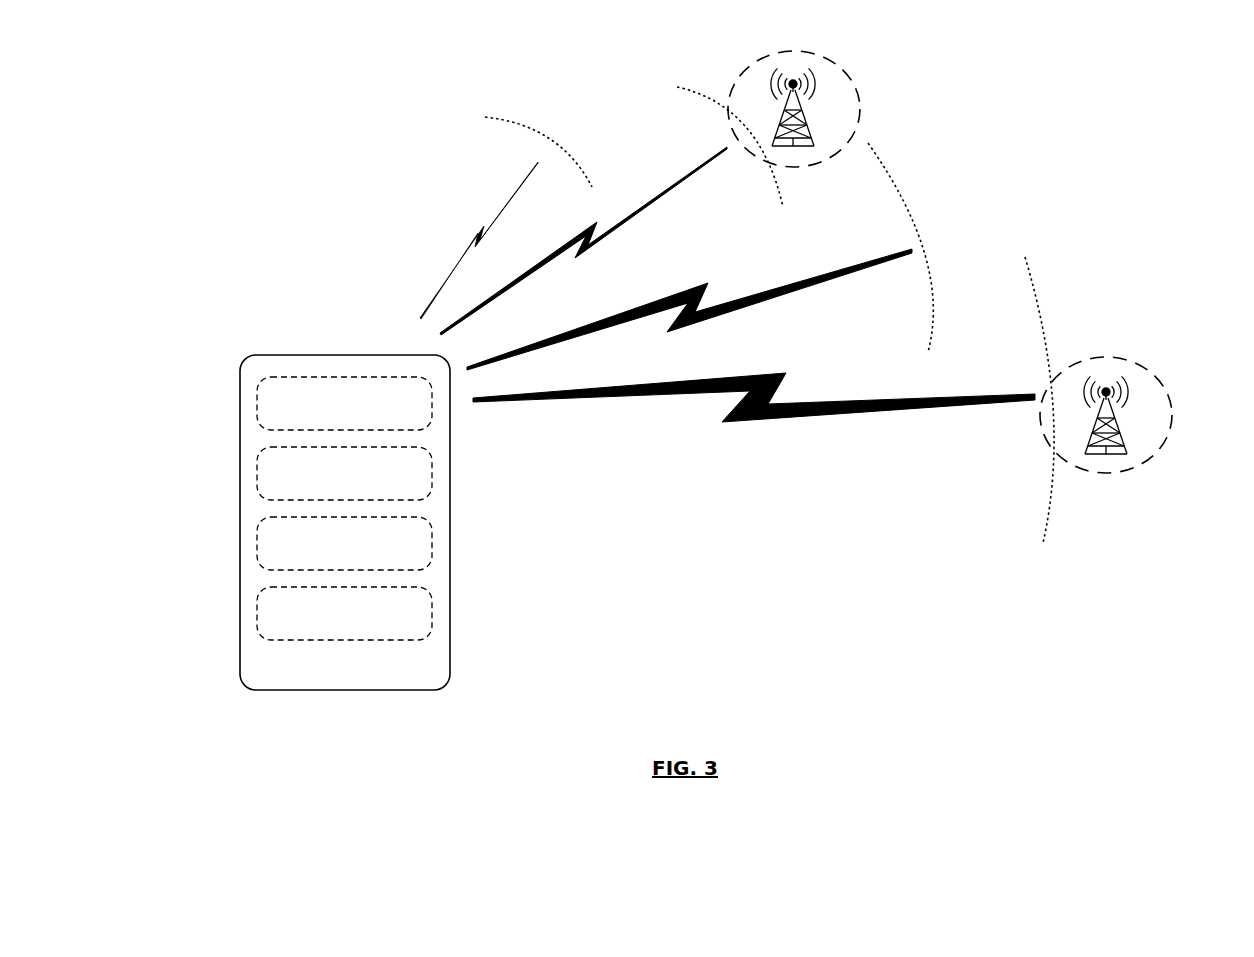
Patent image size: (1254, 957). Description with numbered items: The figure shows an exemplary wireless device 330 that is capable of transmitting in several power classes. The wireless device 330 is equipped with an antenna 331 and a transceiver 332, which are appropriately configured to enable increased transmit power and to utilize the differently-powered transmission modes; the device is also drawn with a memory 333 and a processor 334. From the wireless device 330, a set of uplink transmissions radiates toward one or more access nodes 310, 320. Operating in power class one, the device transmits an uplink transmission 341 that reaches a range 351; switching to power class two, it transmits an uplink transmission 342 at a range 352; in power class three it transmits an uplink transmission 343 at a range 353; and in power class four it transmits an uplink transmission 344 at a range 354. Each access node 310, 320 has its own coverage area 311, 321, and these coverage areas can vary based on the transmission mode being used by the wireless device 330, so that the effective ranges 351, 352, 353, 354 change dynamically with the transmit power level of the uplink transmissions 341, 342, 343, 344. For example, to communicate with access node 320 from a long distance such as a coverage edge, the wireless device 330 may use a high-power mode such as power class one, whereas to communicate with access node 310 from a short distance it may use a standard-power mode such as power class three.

The access node 310 is at (803, 120).
The coverage area 311 is at (832, 62).
The access node 320 is at (1115, 428).
The coverage area 321 is at (1145, 368).
The wireless device 330 is at (257, 358).
The antenna 331 is at (255, 402).
The transceiver 332 is at (255, 473).
The memory 333 is at (255, 545).
The processor 334 is at (255, 613).
The uplink transmission 341 is at (900, 398).
The uplink transmission 342 is at (788, 283).
The uplink transmission 343 is at (692, 173).
The uplink transmission 344 is at (477, 238).
The range 351 is at (1033, 278).
The range 352 is at (868, 143).
The range 353 is at (697, 93).
The range 354 is at (500, 117).